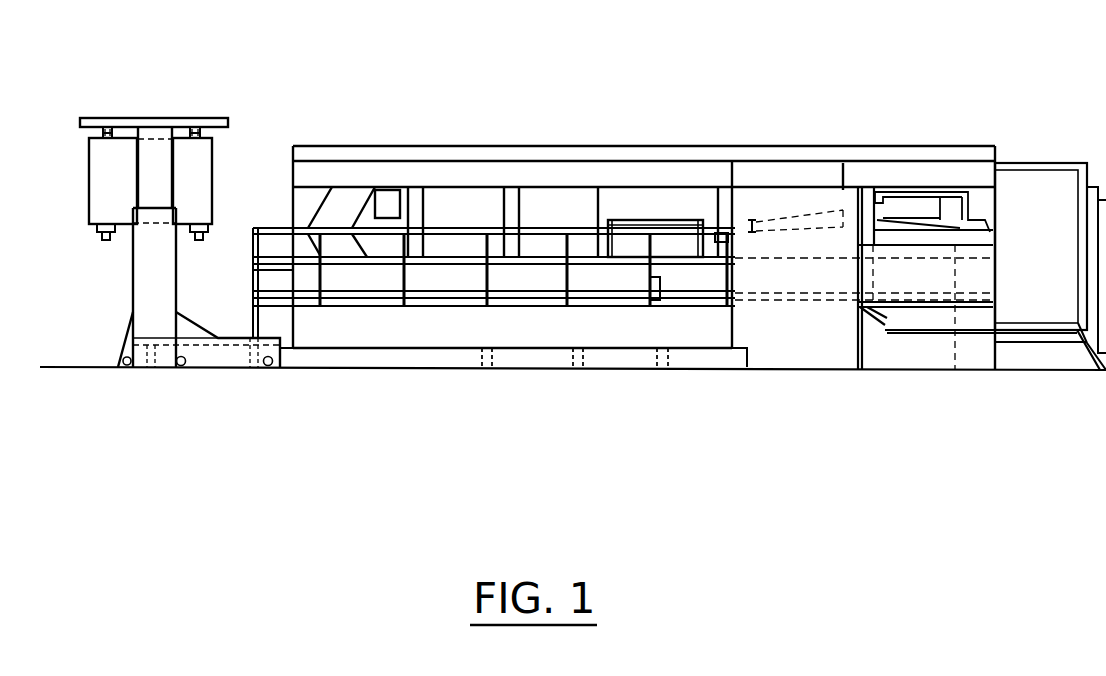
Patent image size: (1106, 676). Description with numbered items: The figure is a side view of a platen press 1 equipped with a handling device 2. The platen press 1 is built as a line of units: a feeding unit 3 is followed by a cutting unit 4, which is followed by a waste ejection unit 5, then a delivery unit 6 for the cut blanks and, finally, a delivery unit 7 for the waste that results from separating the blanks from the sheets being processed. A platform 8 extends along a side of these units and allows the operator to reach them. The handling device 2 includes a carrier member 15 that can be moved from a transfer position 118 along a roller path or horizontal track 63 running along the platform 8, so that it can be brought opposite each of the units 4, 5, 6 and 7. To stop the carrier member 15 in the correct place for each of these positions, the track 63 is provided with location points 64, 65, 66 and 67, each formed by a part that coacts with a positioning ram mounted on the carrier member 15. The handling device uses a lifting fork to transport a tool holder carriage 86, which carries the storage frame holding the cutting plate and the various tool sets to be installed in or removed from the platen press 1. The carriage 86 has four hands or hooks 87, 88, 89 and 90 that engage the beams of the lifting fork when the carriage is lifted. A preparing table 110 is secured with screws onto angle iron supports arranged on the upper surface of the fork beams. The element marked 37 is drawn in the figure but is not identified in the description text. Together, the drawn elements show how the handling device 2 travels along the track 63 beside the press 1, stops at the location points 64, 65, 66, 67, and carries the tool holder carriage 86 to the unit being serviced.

The platen press 1 is at (707, 110).
The handling device 2 is at (183, 239).
The feeding unit 3 is at (903, 205).
The cutting unit 4 is at (658, 225).
The waste ejection unit 5 is at (558, 210).
The delivery unit for the cut blanks 6 is at (470, 205).
The delivery unit for the waste 7 is at (352, 203).
The platform 8 is at (432, 295).
The carrier member 15 is at (128, 278).
The housing 37 is at (230, 132).
The roller path 63 is at (322, 360).
The location point 64 is at (152, 368).
The location point 65 is at (487, 368).
The location point 66 is at (578, 368).
The location point 67 is at (663, 368).
The tool holder carriage 86 is at (89, 155).
The hook 87 is at (110, 83).
The hook 89 is at (102, 135).
The hook 88 is at (227, 83).
The hook 90 is at (188, 123).
The preparing table 110 is at (222, 122).
The transfer position 118 is at (153, 100).